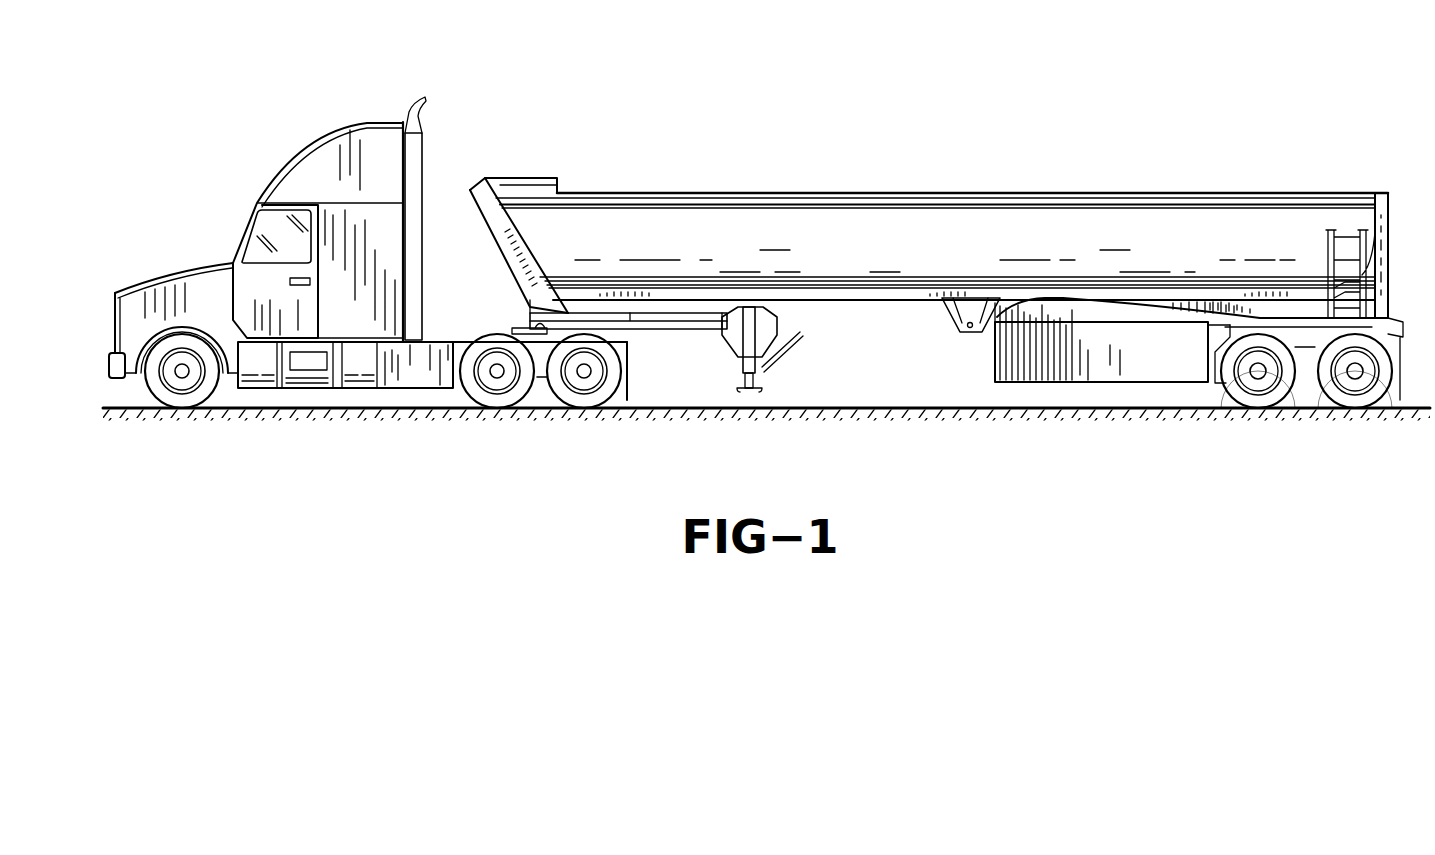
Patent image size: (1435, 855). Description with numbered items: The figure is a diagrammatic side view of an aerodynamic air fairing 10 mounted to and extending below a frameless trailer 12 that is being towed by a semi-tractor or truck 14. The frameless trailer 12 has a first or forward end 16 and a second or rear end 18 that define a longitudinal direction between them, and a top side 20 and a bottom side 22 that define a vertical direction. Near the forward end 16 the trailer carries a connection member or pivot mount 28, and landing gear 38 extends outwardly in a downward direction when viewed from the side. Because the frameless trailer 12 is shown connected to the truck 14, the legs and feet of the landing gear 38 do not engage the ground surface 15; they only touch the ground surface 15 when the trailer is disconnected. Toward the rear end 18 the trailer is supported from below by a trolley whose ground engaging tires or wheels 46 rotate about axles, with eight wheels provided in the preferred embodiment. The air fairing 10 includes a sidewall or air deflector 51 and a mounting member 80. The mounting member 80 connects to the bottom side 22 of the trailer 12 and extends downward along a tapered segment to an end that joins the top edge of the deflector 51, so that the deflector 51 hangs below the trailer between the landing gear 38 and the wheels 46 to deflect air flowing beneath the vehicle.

The air fairing 10 is at (1128, 350).
The frameless trailer 12 is at (942, 191).
The truck 14 is at (284, 157).
The ground surface 15 is at (666, 407).
The forward end 16 is at (475, 166).
The rear end 18 is at (1393, 169).
The top side 20 is at (870, 180).
The bottom side 22 is at (840, 362).
The pivot mount 28 is at (968, 299).
The landing gear 38 is at (736, 364).
The wheels 46 is at (1257, 403).
The air deflector 51 is at (1107, 376).
The mounting member 80 is at (1153, 302).